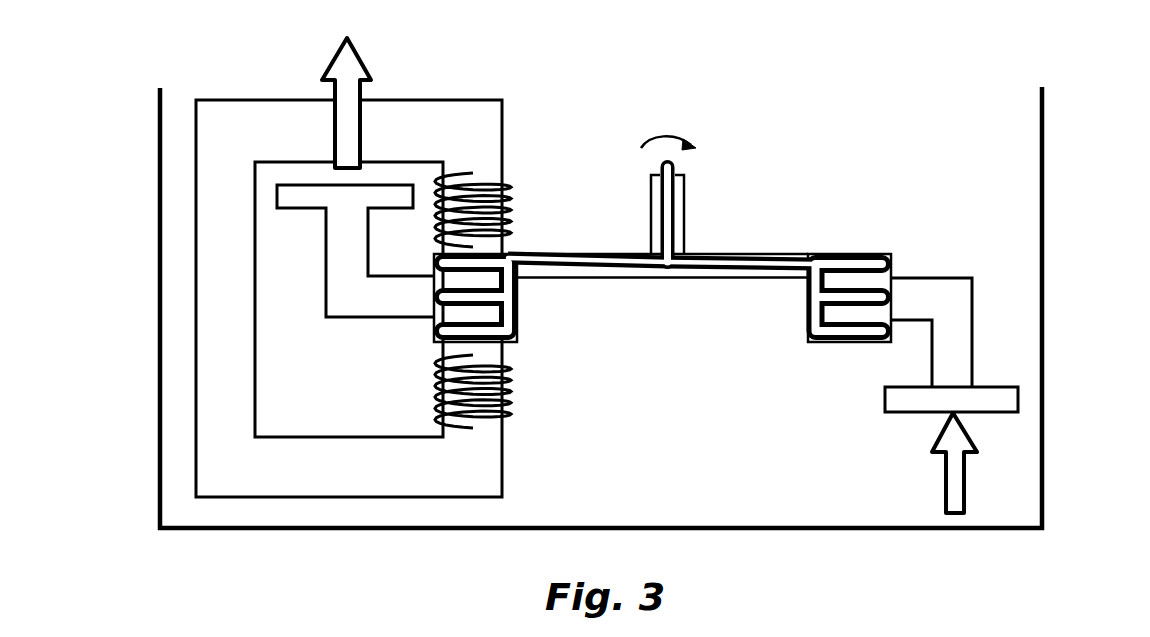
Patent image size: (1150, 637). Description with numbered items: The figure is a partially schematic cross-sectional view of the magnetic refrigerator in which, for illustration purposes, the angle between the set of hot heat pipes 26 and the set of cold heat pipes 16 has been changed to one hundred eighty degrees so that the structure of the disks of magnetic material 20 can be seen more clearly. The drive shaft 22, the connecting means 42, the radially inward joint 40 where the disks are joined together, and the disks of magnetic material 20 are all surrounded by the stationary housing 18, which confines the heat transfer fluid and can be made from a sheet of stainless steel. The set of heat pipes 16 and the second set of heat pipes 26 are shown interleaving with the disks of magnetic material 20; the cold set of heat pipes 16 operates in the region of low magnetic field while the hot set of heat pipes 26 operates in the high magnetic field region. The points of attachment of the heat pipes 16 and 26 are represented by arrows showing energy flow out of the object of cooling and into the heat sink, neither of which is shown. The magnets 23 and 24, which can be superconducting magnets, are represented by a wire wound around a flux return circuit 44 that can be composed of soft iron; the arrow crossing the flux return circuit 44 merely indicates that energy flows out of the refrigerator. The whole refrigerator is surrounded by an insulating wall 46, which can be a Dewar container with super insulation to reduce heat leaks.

The set of heat pipes 16 is at (938, 372).
The stationary housing 18 is at (583, 277).
The magnetic material 20 is at (893, 272).
The drive shaft 22 is at (676, 163).
The magnet 23 is at (512, 185).
The magnet 24 is at (512, 393).
The second set of heat pipes 26 is at (337, 295).
The radially inward joint 40 is at (828, 299).
The connecting means 42 is at (728, 265).
The flux return circuit 44 is at (215, 131).
The insulating wall 46 is at (1043, 253).